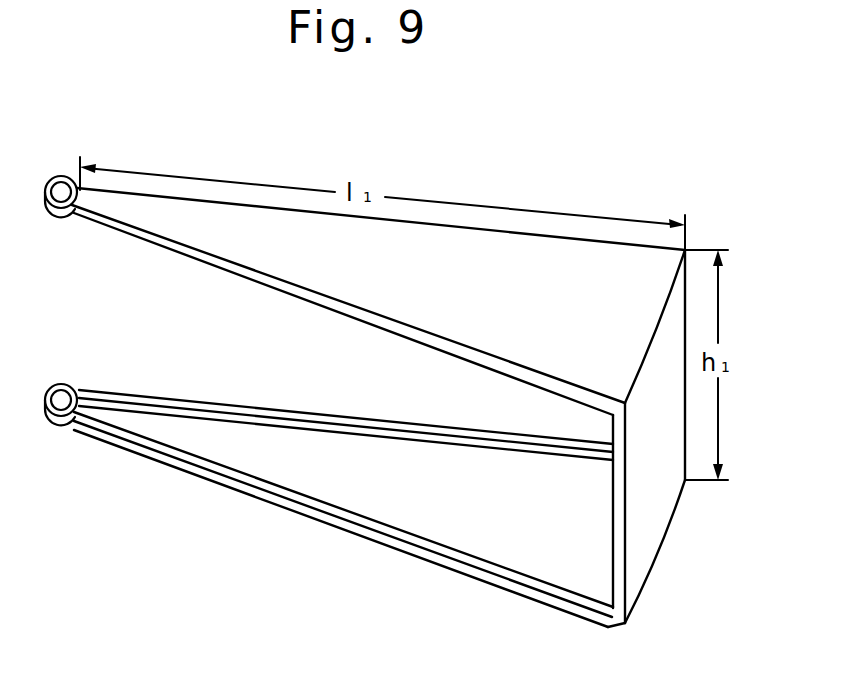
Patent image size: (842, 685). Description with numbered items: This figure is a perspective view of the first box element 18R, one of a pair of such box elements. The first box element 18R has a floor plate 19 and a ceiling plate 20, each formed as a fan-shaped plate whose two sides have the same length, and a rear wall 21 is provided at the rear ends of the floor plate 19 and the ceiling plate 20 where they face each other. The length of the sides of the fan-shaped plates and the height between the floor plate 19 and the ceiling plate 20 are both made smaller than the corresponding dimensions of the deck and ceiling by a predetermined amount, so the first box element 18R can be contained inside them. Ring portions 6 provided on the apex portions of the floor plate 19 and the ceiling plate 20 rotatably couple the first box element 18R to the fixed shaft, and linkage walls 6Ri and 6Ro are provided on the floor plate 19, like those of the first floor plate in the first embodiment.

The ring portions 6 is at (60, 185).
The linkage wall 6Ro is at (168, 403).
The linkage wall 6Ri is at (283, 507).
The first box element 18R is at (679, 178).
The floor plate 19 is at (475, 528).
The ceiling plate 20 is at (283, 260).
The rear wall 21 is at (658, 532).